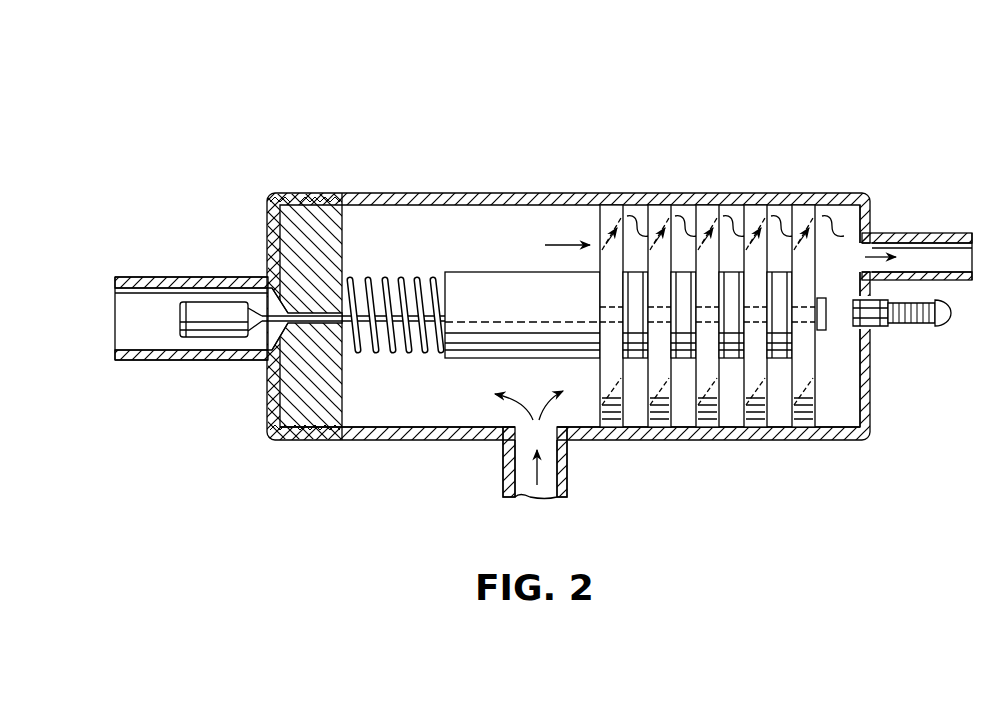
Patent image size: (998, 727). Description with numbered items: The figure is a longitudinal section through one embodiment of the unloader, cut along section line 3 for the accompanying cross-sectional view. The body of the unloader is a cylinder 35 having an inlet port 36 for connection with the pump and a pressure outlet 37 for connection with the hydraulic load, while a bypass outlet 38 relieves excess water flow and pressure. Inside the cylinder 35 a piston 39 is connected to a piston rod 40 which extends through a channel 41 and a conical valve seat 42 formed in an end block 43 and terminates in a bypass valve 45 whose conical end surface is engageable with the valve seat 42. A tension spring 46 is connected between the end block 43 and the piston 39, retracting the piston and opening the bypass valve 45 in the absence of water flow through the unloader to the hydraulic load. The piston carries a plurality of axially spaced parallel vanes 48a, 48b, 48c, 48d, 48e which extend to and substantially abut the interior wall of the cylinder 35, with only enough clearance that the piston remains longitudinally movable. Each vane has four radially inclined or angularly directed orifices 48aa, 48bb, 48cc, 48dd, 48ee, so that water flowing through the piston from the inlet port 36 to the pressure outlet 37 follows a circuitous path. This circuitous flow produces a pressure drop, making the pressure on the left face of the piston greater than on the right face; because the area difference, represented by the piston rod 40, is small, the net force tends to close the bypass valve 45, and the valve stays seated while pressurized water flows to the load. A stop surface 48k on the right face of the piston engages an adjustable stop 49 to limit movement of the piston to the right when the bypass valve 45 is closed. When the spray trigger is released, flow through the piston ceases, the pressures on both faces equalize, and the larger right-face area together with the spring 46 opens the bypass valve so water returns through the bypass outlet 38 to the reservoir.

The section line 3- 3 is at (843, 582).
The cylinder 35 is at (465, 195).
The inlet port 36 is at (533, 492).
The pressure outlet 37 is at (921, 252).
The bypass outlet 38 is at (138, 307).
The piston 39 is at (505, 275).
The piston rod 40 is at (378, 285).
The channel 41 is at (305, 330).
The conical valve seat 42 is at (272, 362).
The end block 43 is at (306, 215).
The bypass valve 45 is at (215, 315).
The tension spring 46 is at (395, 355).
The vane 48a is at (610, 207).
The vane 48b is at (661, 207).
The vane 48c is at (706, 207).
The vane 48d is at (753, 207).
The vane 48e is at (805, 207).
The radially inclined orifice 48aa is at (621, 405).
The radially inclined orifice 48bb is at (667, 405).
The radially inclined orifice 48cc is at (715, 405).
The radially inclined orifice 48dd is at (762, 405).
The radially inclined orifice 48ee is at (808, 407).
The stop surface 48k is at (824, 332).
The adjustable stop 49 is at (852, 338).